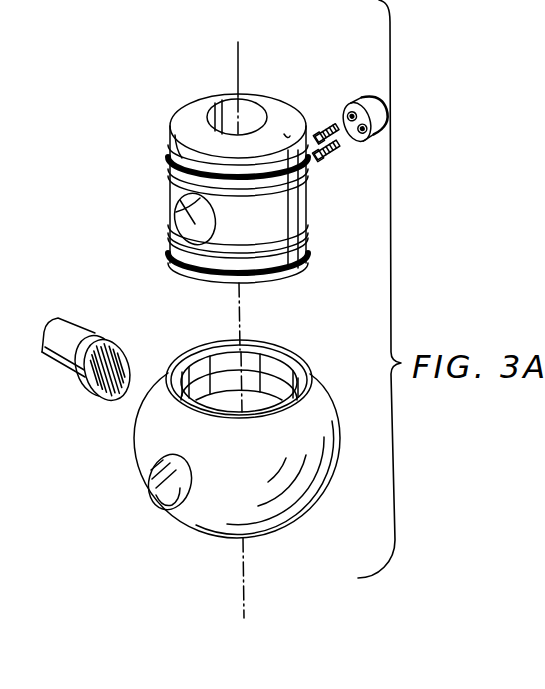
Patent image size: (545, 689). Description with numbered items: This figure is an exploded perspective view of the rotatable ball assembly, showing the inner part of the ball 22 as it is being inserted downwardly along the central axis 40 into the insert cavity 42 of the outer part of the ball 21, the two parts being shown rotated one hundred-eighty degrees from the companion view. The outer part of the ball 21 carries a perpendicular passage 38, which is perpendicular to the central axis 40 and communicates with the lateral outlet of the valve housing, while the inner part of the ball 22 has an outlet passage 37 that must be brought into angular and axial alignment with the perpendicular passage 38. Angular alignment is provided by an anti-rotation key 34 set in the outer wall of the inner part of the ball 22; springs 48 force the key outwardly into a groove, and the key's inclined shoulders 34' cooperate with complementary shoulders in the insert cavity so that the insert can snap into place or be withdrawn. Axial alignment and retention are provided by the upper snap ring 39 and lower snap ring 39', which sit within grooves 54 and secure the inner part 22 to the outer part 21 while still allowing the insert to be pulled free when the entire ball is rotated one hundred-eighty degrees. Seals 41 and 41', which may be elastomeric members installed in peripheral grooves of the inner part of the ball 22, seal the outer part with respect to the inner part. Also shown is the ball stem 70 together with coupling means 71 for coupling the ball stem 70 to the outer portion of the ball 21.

The outer part of the ball 21 is at (293, 493).
The inner part of the ball 22 is at (286, 214).
The anti-rotation key 34 is at (348, 95).
The inclined shoulders 34' is at (372, 95).
The outlet passage 37 is at (188, 220).
The perpendicular passage 38 is at (170, 489).
The upper snap ring 39 is at (268, 181).
The lower snap ring 39' is at (268, 251).
The central axis 40 is at (238, 63).
The seal 41 is at (207, 167).
The seal 41' is at (209, 257).
The insert cavity 42 is at (275, 393).
The springs 48 is at (325, 127).
The grooves 54 is at (257, 370).
The ball stem 70 is at (77, 333).
The coupling means 71 is at (130, 360).